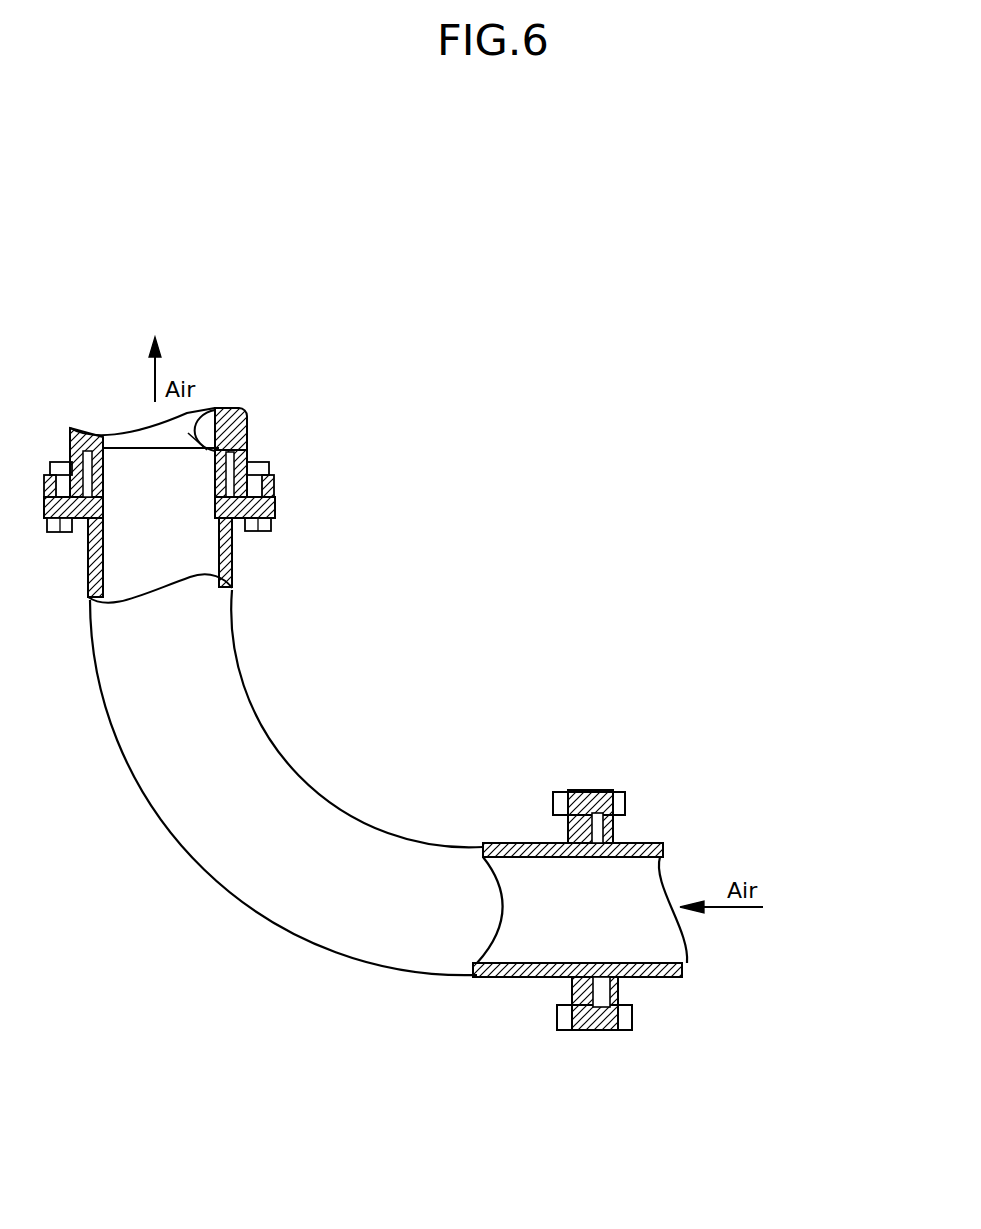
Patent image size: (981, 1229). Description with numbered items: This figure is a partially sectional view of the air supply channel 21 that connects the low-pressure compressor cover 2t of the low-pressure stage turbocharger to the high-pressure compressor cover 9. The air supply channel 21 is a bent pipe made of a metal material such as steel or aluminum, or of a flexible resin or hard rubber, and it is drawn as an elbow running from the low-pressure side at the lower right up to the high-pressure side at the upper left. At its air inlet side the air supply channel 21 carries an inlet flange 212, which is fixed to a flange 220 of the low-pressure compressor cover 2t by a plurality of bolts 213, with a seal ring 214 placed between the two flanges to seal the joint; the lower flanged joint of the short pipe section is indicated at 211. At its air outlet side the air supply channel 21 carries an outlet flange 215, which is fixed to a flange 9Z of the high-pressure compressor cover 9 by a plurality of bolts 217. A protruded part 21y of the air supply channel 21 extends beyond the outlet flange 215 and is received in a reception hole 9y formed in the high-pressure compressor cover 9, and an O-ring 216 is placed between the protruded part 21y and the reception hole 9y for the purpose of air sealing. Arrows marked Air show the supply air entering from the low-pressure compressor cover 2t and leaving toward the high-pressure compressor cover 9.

The air supply channel 21 is at (210, 851).
The protruded part 21y is at (200, 413).
The O-ring 216 is at (110, 447).
The bolts 217 is at (57, 532).
The high-pressure compressor cover 9 is at (250, 425).
The reception hole 9y is at (243, 442).
The flange 9Z is at (275, 483).
The outlet flange 215 is at (275, 507).
The low-pressure compressor cover 2t is at (660, 838).
The inlet flange 212 is at (567, 830).
The bolts 213 is at (557, 795).
The flange 220 is at (605, 787).
The seal ring 214 is at (617, 827).
The flange 211 is at (497, 980).